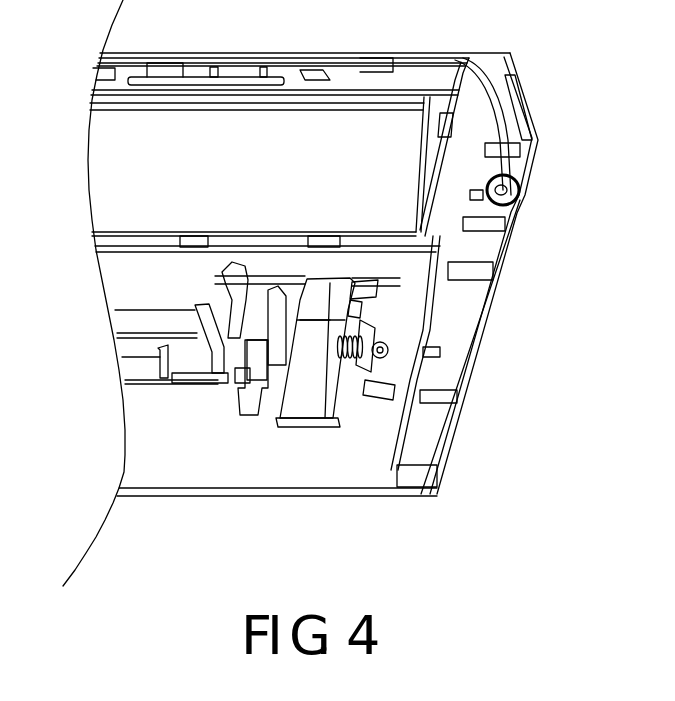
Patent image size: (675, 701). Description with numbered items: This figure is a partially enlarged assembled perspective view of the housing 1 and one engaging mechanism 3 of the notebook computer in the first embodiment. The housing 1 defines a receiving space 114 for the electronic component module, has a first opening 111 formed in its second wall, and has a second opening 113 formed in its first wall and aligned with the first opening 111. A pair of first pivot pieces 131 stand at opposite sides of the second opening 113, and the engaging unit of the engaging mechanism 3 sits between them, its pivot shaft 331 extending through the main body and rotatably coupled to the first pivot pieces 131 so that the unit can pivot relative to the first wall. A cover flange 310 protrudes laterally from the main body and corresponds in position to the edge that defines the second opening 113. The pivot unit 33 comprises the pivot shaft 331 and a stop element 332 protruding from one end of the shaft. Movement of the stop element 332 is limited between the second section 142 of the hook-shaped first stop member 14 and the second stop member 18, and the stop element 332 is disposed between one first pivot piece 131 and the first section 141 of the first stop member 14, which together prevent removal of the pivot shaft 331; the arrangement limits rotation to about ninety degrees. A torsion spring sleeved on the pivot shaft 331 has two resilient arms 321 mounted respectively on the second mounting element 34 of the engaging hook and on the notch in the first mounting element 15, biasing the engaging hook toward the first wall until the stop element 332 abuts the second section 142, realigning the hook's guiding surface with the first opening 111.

The housing 1 is at (528, 150).
The engaging mechanism 3 is at (298, 442).
The first stop member 14 is at (237, 423).
The first mounting element 15 is at (390, 405).
The second stop member 18 is at (270, 412).
The pivot unit 33 is at (243, 342).
The second mounting element 34 is at (357, 307).
The first opening 111 is at (362, 288).
The second opening 113 is at (355, 425).
The receiving space 114 is at (250, 467).
The first pivot piece 131 is at (261, 368).
The first section 141 is at (247, 407).
The second section 142 is at (236, 375).
The cover flange 310 is at (315, 428).
The resilient arm 321 is at (357, 315).
The pivot shaft 331 is at (388, 352).
The stop element 332 is at (258, 358).